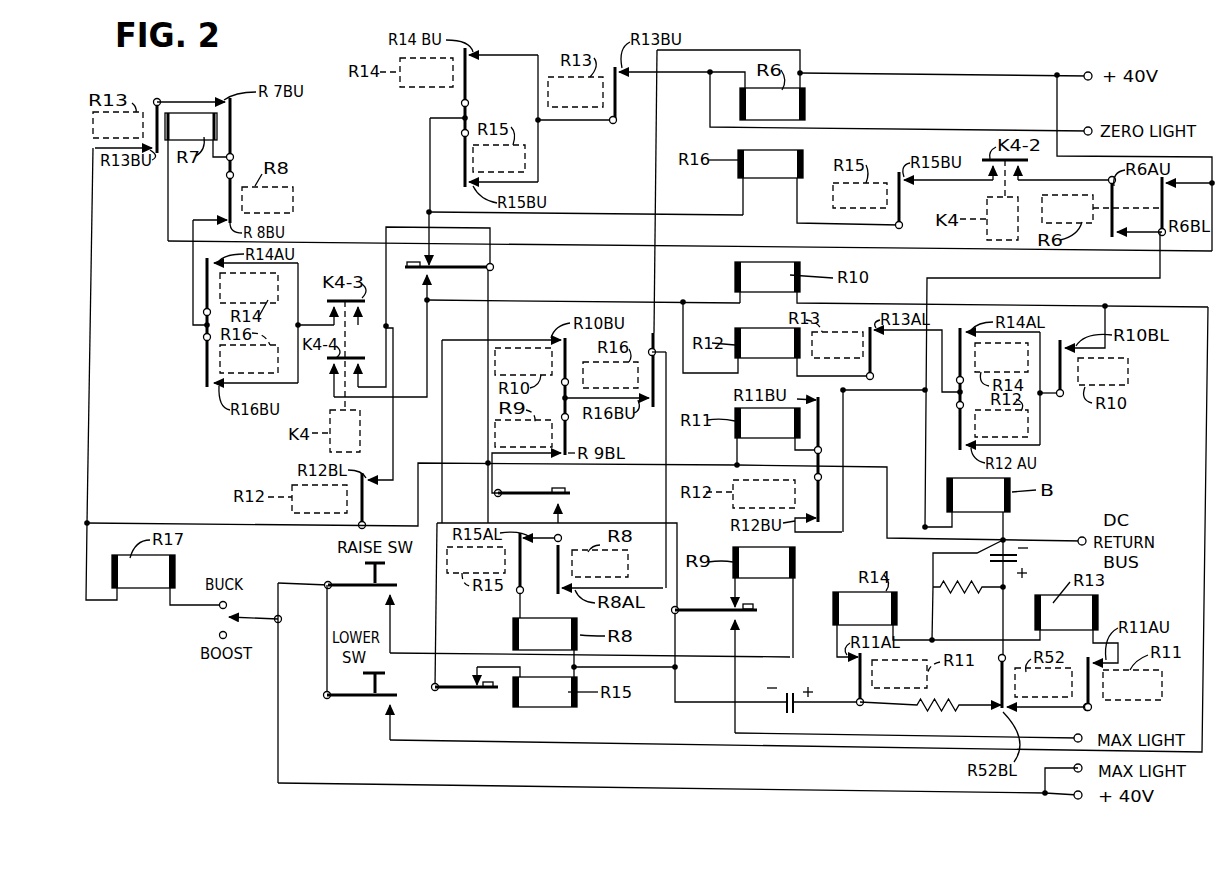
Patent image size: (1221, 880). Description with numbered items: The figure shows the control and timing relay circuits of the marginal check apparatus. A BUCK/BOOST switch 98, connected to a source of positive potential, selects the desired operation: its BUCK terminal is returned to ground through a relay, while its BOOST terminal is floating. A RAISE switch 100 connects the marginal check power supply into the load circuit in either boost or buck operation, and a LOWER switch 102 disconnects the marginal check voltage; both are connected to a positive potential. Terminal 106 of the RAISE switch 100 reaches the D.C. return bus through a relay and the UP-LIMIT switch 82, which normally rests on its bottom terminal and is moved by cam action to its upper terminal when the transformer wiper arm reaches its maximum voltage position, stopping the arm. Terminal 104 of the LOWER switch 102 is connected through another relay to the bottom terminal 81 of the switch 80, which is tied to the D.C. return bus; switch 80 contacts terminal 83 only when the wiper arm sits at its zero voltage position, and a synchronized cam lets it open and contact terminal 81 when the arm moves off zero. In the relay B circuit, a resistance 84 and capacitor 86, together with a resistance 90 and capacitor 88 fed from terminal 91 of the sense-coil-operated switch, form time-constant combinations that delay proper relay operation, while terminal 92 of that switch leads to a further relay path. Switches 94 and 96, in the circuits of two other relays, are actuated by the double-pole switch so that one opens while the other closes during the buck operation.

The switch 80 is at (470, 268).
The bottom terminal 81 is at (423, 284).
The UP-LIMIT switch 82 is at (719, 613).
The terminal 83 is at (436, 263).
The resistance 84 is at (972, 584).
The capacitor 86 is at (1020, 557).
The capacitor 88 is at (790, 690).
The resistance 90 is at (950, 711).
The terminal 91 is at (998, 700).
The terminal 92 is at (1013, 710).
The switch 94 is at (455, 690).
The switch 96 is at (567, 490).
The BUCK/BOOST switch 98 is at (224, 619).
The RAISE switch 100 is at (360, 582).
The LOWER switch 102 is at (388, 694).
The terminal 104 is at (387, 712).
The terminal 106 is at (388, 600).